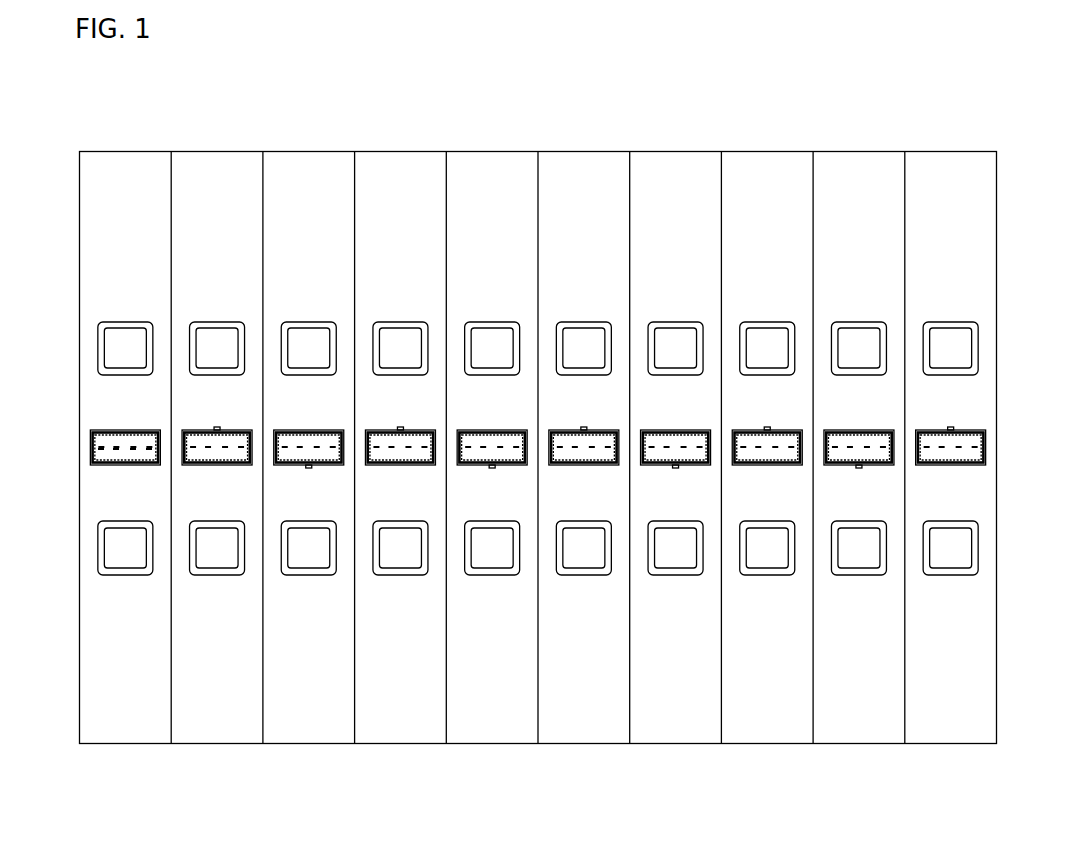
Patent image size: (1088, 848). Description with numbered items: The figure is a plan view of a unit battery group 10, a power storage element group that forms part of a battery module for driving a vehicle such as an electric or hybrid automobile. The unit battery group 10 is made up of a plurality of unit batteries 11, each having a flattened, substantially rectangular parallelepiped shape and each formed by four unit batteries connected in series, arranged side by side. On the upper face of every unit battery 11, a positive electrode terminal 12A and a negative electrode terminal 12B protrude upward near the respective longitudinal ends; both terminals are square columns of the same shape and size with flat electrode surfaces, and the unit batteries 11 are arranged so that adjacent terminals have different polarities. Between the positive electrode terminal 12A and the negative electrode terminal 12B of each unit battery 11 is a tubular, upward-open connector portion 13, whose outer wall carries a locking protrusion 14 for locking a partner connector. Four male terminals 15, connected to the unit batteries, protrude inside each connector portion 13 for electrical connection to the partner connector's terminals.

The unit battery group 10 is at (937, 131).
The unit battery 11 is at (310, 723).
The positive electrode terminal 12A is at (956, 348).
The negative electrode terminal 12B is at (857, 333).
The connector portion 13 is at (105, 442).
The locking protrusion 14 is at (951, 425).
The male terminal 15 is at (149, 452).